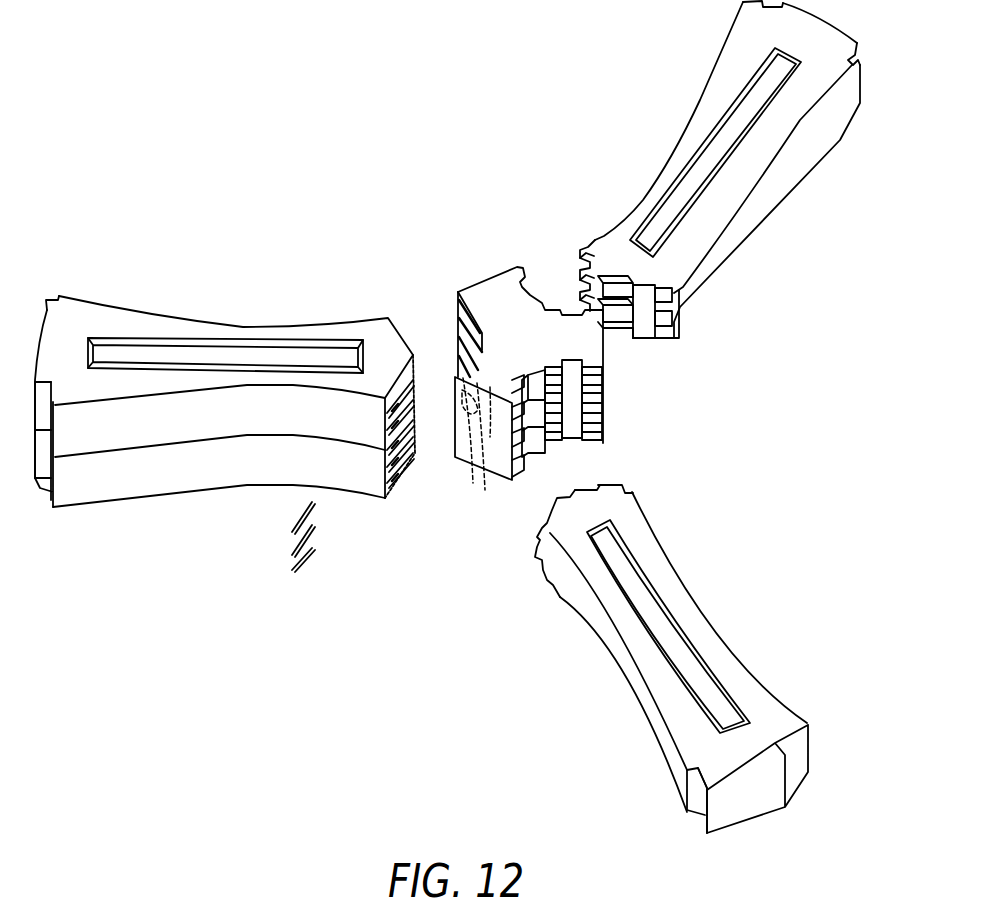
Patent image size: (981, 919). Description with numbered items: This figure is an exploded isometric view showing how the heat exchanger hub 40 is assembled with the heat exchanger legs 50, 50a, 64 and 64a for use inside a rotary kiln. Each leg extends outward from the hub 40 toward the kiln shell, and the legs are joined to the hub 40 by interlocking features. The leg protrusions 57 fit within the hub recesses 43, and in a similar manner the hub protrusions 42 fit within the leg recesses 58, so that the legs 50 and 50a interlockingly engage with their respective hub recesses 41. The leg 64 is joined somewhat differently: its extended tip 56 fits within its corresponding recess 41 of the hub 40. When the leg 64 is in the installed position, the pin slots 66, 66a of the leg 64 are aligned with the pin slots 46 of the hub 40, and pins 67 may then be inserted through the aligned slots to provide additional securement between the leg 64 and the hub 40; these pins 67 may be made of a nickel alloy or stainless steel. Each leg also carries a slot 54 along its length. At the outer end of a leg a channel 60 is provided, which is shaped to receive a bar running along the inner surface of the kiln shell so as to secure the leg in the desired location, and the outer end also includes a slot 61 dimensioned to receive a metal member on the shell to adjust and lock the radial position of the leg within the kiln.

The hub 40 is at (559, 372).
The hub recess 41 is at (542, 315).
The hub protrusion 42 is at (597, 418).
The hub recess 43 is at (572, 387).
The pin slot 46 is at (489, 444).
The leg 50 is at (717, 251).
The leg 50a is at (701, 628).
The slot 54 is at (717, 153).
The extended tip 56 is at (414, 446).
The leg protrusion 57 is at (673, 303).
The leg recess 58 is at (673, 293).
The channel 60 is at (38, 490).
The slot 61 is at (47, 303).
The leg 64 is at (460, 431).
The leg 64a is at (154, 322).
The pin slot 66 is at (423, 425).
The pin slot 66a is at (413, 408).
The pin 67 is at (312, 563).